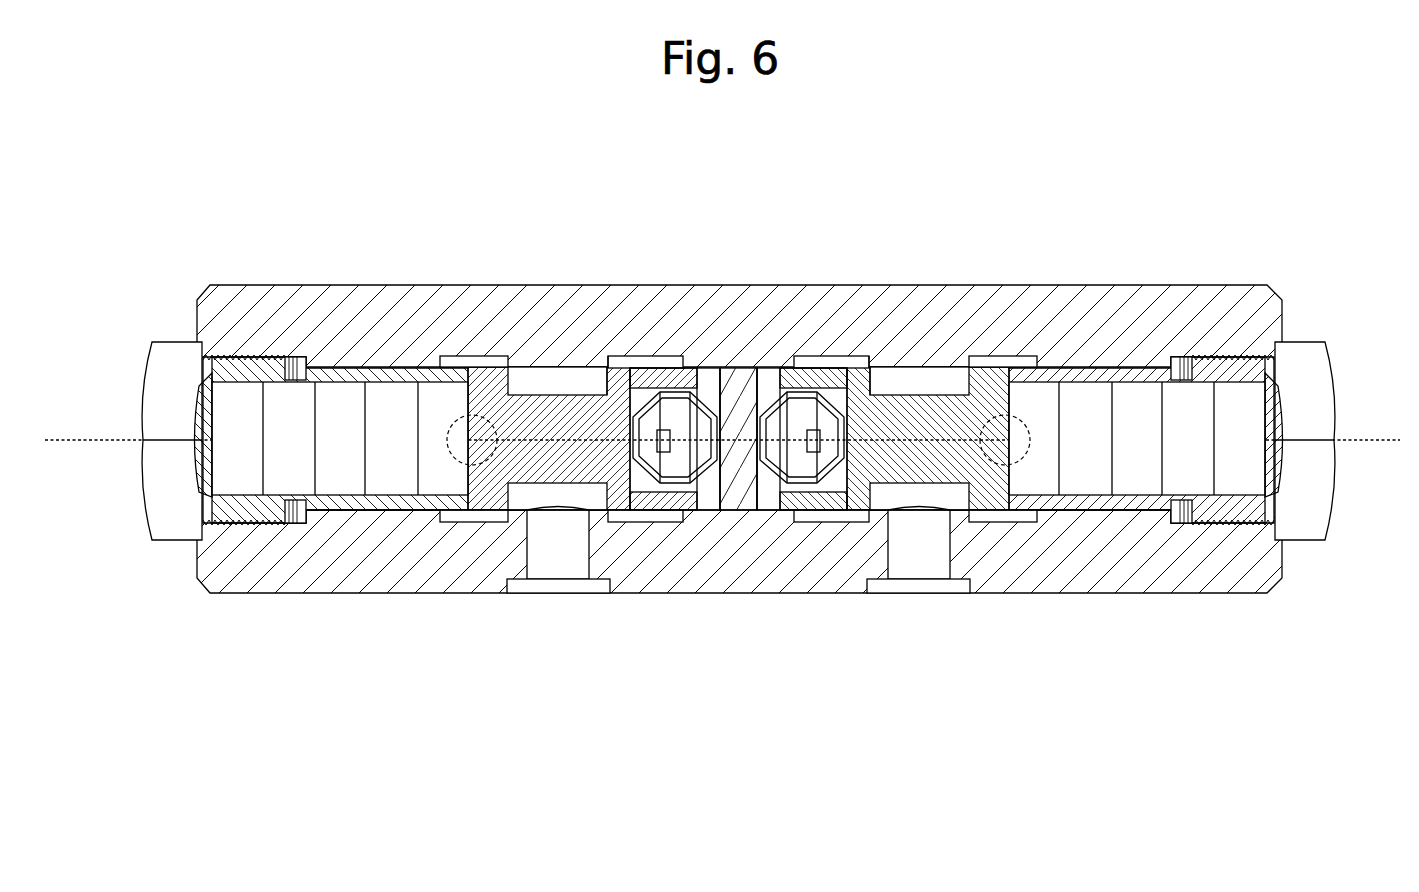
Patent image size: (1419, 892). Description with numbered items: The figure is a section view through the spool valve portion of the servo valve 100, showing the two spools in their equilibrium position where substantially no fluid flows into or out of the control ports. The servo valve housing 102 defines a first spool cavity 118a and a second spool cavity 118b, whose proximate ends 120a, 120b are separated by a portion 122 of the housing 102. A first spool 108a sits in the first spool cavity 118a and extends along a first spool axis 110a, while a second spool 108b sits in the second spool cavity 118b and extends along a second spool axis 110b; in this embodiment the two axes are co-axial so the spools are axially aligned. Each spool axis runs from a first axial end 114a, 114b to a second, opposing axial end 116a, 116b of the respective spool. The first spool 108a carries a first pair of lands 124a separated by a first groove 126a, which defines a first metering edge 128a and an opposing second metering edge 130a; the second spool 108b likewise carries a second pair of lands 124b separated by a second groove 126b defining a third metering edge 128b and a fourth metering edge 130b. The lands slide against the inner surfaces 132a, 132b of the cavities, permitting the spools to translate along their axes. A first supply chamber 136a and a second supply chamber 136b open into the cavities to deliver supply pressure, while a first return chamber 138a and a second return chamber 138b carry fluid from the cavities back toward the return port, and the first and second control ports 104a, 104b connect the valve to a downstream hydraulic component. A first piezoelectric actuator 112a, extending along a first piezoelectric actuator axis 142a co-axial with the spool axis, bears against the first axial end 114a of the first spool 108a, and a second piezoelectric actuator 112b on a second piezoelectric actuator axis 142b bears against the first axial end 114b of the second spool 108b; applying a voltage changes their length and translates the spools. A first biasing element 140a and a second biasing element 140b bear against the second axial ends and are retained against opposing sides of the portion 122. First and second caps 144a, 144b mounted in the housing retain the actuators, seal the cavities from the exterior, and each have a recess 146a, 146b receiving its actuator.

The servo valve 100 is at (204, 166).
The servo valve housing 102 is at (280, 568).
The first control port 104a is at (530, 592).
The second control port 104b is at (940, 586).
The first spool 108a is at (550, 455).
The second spool 108b is at (928, 472).
The first spool axis 110a is at (615, 440).
The second spool axis 110b is at (878, 440).
The first piezoelectric actuator 112a is at (340, 420).
The second piezoelectric actuator 112b is at (1137, 420).
The first axial end 114a is at (465, 395).
The first axial end 114b is at (1010, 405).
The second axial end 116a is at (620, 380).
The second axial end 116b is at (838, 410).
The first spool cavity 118a is at (569, 497).
The second spool cavity 118b is at (937, 495).
The proximate end 120a is at (723, 390).
The proximate end 120b is at (752, 390).
The portion of the housing 122 is at (738, 482).
The first pair of lands 124a is at (480, 372).
The second pair of lands 124b is at (857, 385).
The first groove 126a is at (577, 390).
The second groove 126b is at (957, 380).
The first metering edge 128a is at (513, 380).
The third metering edge 128b is at (987, 382).
The second metering edge 130a is at (620, 382).
The fourth metering edge 130b is at (875, 382).
The inner surface 132a is at (550, 378).
The inner surface 132b is at (915, 380).
The first supply chamber 136a is at (458, 518).
The second supply chamber 136b is at (1007, 518).
The first return chamber 138a is at (678, 518).
The second return chamber 138b is at (838, 518).
The first biasing element 140a is at (671, 474).
The second biasing element 140b is at (770, 476).
The first piezoelectric actuator axis 142a is at (345, 442).
The second piezoelectric actuator axis 142b is at (1150, 440).
The first cap 144a is at (172, 380).
The second cap 144b is at (1305, 395).
The recess 146a is at (213, 422).
The recess 146b is at (1245, 420).